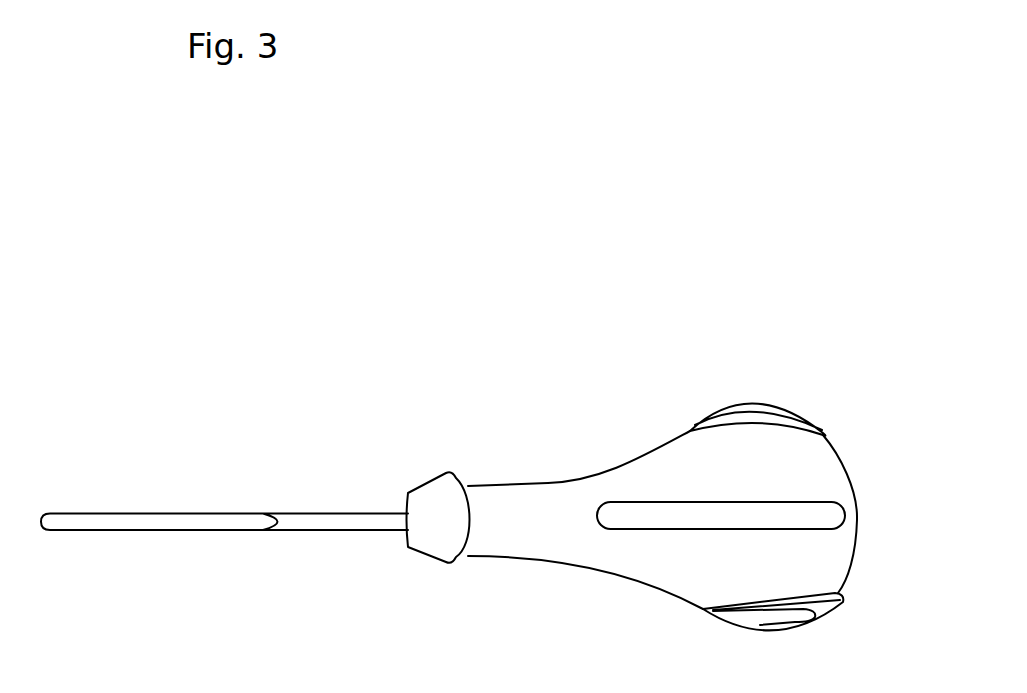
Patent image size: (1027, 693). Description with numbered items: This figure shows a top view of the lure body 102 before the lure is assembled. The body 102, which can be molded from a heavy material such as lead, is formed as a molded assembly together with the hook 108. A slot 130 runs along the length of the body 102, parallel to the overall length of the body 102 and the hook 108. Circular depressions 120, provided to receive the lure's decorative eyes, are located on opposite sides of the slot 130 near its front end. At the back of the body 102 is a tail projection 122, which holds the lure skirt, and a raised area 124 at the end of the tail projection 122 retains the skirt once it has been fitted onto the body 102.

The body 102 is at (698, 481).
The hook 108 is at (93, 514).
The circular depressions 120 is at (725, 403).
The tail projection 122 is at (505, 533).
The raised area 124 is at (445, 518).
The slot 130 is at (778, 503).